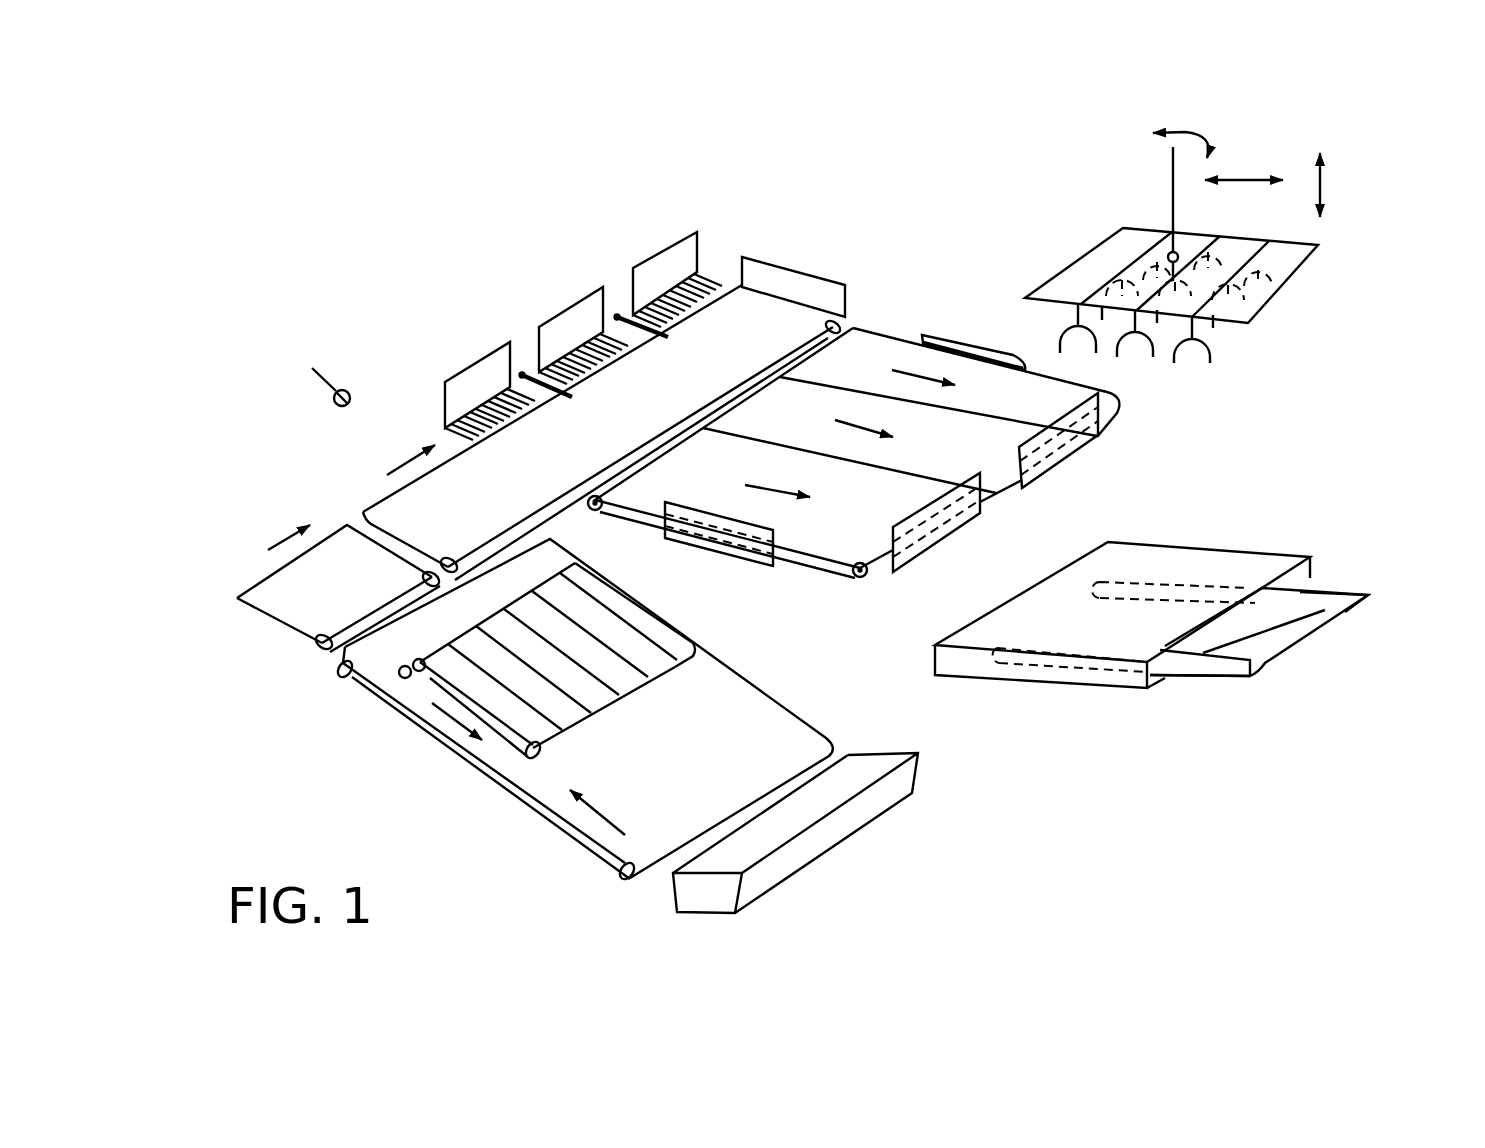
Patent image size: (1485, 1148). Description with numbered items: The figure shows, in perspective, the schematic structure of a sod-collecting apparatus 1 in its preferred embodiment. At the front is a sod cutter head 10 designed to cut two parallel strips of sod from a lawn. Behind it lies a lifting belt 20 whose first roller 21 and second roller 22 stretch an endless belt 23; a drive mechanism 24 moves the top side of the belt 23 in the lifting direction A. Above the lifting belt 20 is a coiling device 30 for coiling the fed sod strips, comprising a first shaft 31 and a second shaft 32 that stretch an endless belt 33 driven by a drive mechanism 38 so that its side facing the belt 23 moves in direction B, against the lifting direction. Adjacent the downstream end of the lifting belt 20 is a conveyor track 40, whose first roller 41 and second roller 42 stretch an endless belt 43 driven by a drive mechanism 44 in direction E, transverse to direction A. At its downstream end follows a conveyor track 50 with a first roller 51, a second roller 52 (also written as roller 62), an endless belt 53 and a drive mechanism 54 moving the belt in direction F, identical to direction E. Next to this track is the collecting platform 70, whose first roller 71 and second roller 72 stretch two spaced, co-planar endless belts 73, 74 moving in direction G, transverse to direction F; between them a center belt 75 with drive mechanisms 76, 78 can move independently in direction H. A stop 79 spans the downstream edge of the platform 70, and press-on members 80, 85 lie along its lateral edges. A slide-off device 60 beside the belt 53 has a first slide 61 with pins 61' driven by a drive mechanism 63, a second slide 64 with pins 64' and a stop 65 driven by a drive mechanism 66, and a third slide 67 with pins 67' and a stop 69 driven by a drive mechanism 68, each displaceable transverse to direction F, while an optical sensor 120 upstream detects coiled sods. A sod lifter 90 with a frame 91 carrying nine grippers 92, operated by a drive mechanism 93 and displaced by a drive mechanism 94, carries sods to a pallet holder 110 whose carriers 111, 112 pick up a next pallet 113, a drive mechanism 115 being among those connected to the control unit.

The collecting apparatus 1 is at (812, 511).
The sod cutter head 10 is at (803, 833).
The lifting belt 20 is at (576, 730).
The first roller 21 is at (598, 890).
The second roller 22 is at (307, 727).
The endless belt 23 is at (588, 708).
The drive mechanism 24 is at (467, 777).
The coiling device 30 is at (603, 696).
The first shaft 31 is at (491, 790).
The second shaft 32 is at (635, 609).
The endless belt 33 is at (573, 651).
The drive mechanism 38 is at (670, 675).
The conveyor track 40 is at (293, 636).
The first roller 41 is at (382, 610).
The second roller 42 is at (284, 690).
The endless belt 43 is at (295, 561).
The drive mechanism 44 is at (233, 635).
The conveyor track 50 is at (581, 400).
The first roller 51 is at (359, 527).
The second roller 52 is at (883, 297).
The endless belt 53 is at (598, 432).
The drive mechanism 54 is at (335, 498).
The slide-off device 60 is at (569, 303).
The first slide 61 is at (682, 221).
The projecting pins 61' is at (709, 262).
The second roller 62 is at (841, 268).
The drive mechanism 63 is at (669, 227).
The second slide 64 is at (554, 304).
The projecting pins 64' is at (613, 366).
The stop 65 is at (614, 287).
The drive mechanism 66 is at (566, 317).
The third slide 67 is at (477, 362).
The projecting pins 67' is at (503, 434).
The drive mechanism 68 is at (457, 388).
The stop 69 is at (558, 406).
The collecting platform 70 is at (884, 425).
The first roller 71 is at (615, 530).
The second roller 72 is at (891, 608).
The endless belt 73 is at (849, 473).
The endless belt 74 is at (980, 373).
The center belt 75 is at (938, 422).
The drive mechanism 76 is at (765, 578).
The drive mechanism 78 is at (1015, 482).
The stop 79 is at (1139, 424).
The press-on member 80 is at (901, 524).
The press-on member 85 is at (973, 331).
The sod lifter 90 is at (1232, 235).
The frame 91 is at (1218, 275).
The grippers 92 is at (1192, 329).
The drive mechanism 93 is at (1148, 242).
The drive mechanism 94 is at (1111, 202).
The pallet holder 110 is at (1207, 633).
The carrier 111 is at (1289, 651).
The carrier 112 is at (1272, 584).
The pallet 113 is at (1122, 570).
The drive mechanism 115 is at (1389, 577).
The optical sensor 120 is at (304, 375).
The lifting direction A is at (602, 812).
The direction of coiling belt B is at (446, 710).
The conveying direction E is at (277, 540).
The conveying direction F is at (407, 456).
The conveying direction G is at (836, 425).
The conveying direction H is at (850, 421).